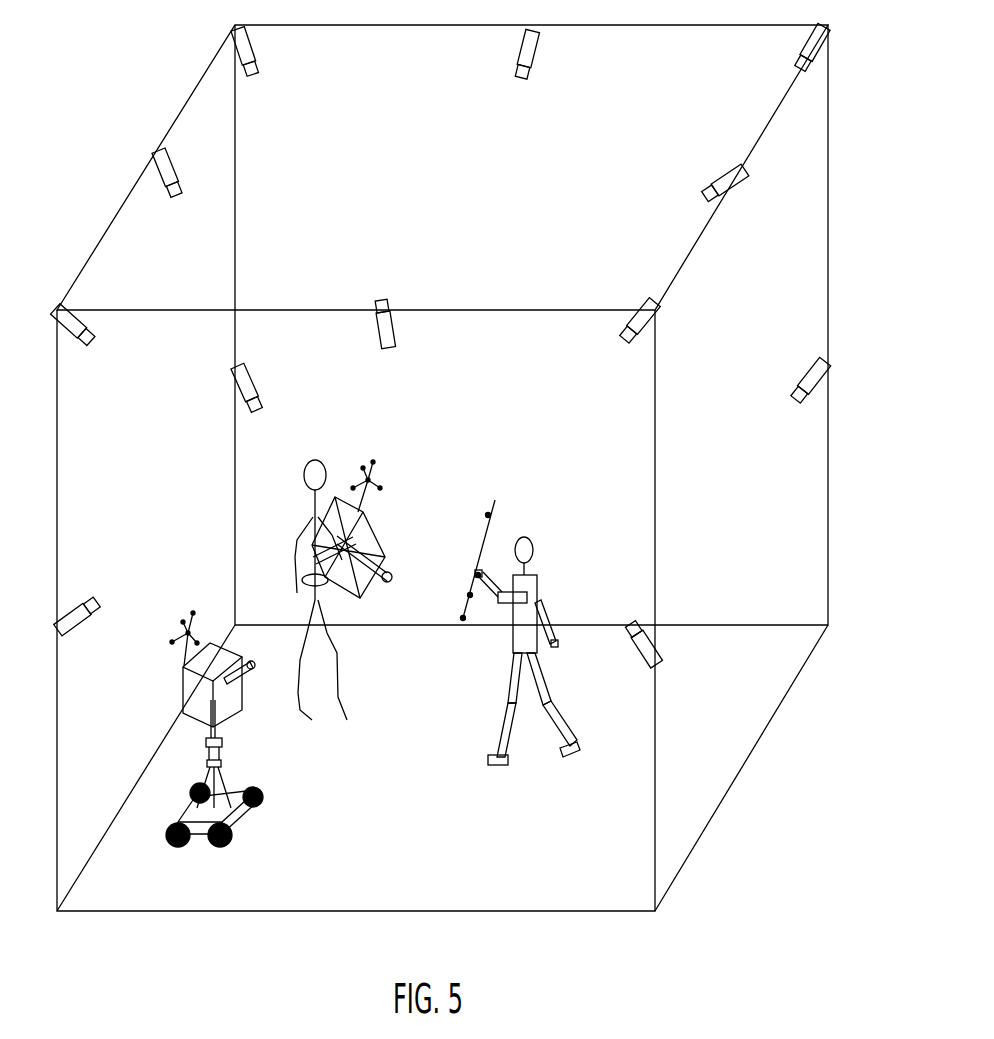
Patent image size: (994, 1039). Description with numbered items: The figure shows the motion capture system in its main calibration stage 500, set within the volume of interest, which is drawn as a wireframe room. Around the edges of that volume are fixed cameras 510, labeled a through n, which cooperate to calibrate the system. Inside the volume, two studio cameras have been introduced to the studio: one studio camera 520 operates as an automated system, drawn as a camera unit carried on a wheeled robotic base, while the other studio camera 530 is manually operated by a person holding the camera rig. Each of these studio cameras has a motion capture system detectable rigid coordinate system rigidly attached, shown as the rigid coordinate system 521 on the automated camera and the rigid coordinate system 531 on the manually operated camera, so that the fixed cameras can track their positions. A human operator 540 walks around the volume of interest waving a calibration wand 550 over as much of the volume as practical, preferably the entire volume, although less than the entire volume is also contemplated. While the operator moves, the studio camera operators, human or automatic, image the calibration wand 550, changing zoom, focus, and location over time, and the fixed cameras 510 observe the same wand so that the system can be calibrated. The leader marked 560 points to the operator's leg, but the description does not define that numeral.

The main calibration stage 500 is at (737, 780).
The fixed cameras 510 is at (752, 298).
The studio camera 520 is at (183, 690).
The rigid coordinate system 521 is at (178, 618).
The studio camera 530 is at (297, 565).
The rigid coordinate system 531 is at (378, 450).
The human operator 540 is at (550, 657).
The calibration wand 550 is at (495, 504).
The performer leg 560 is at (546, 655).